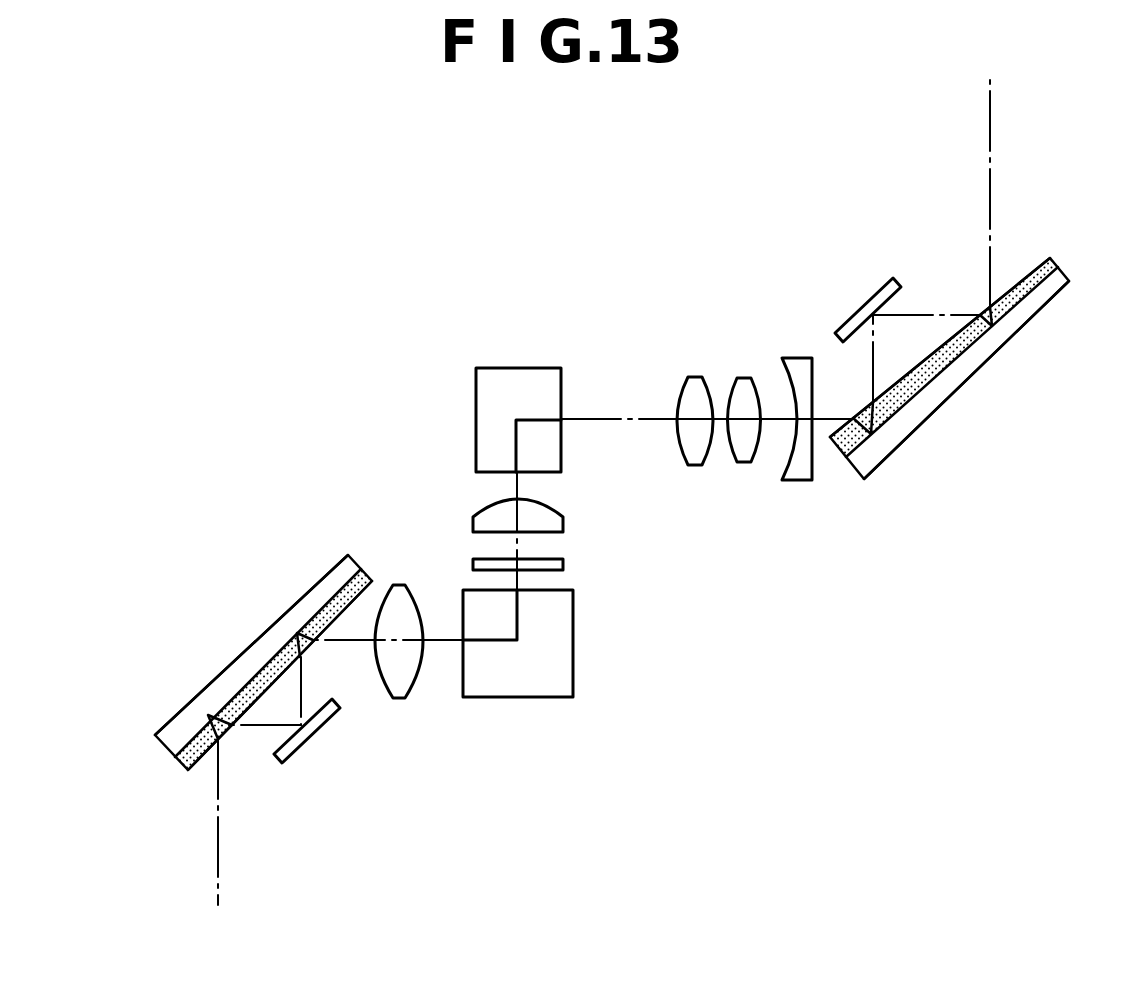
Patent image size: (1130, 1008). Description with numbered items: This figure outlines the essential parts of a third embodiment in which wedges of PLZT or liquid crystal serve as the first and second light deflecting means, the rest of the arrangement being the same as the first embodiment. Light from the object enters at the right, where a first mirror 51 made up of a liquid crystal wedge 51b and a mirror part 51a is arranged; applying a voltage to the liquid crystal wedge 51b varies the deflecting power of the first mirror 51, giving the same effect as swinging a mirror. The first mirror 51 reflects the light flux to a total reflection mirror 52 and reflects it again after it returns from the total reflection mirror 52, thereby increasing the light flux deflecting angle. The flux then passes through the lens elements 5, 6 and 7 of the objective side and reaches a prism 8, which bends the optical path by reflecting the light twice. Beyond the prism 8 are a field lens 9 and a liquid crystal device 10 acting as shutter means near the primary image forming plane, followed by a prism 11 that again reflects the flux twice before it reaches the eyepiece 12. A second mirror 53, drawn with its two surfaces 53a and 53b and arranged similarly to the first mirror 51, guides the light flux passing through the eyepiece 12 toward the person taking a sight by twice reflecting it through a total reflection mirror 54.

The concave lens 5 is at (797, 358).
The lens 6 is at (748, 378).
The lens 7 is at (695, 377).
The prism 8 is at (544, 368).
The field lens 9 is at (566, 518).
The liquid crystal device (LCD) 10 is at (566, 563).
The prism 11 is at (575, 670).
The eyepiece 12 is at (400, 700).
The first mirror 51 is at (949, 350).
The mirror part 51a is at (908, 418).
The liquid crystal wedge 51b is at (1020, 277).
The total reflection mirror 52 is at (885, 287).
The second mirror 53 is at (263, 621).
The surface of optical plate 53a is at (297, 607).
The reflecting surface of optical plate 53b is at (337, 593).
The total reflection mirror 54 is at (302, 753).